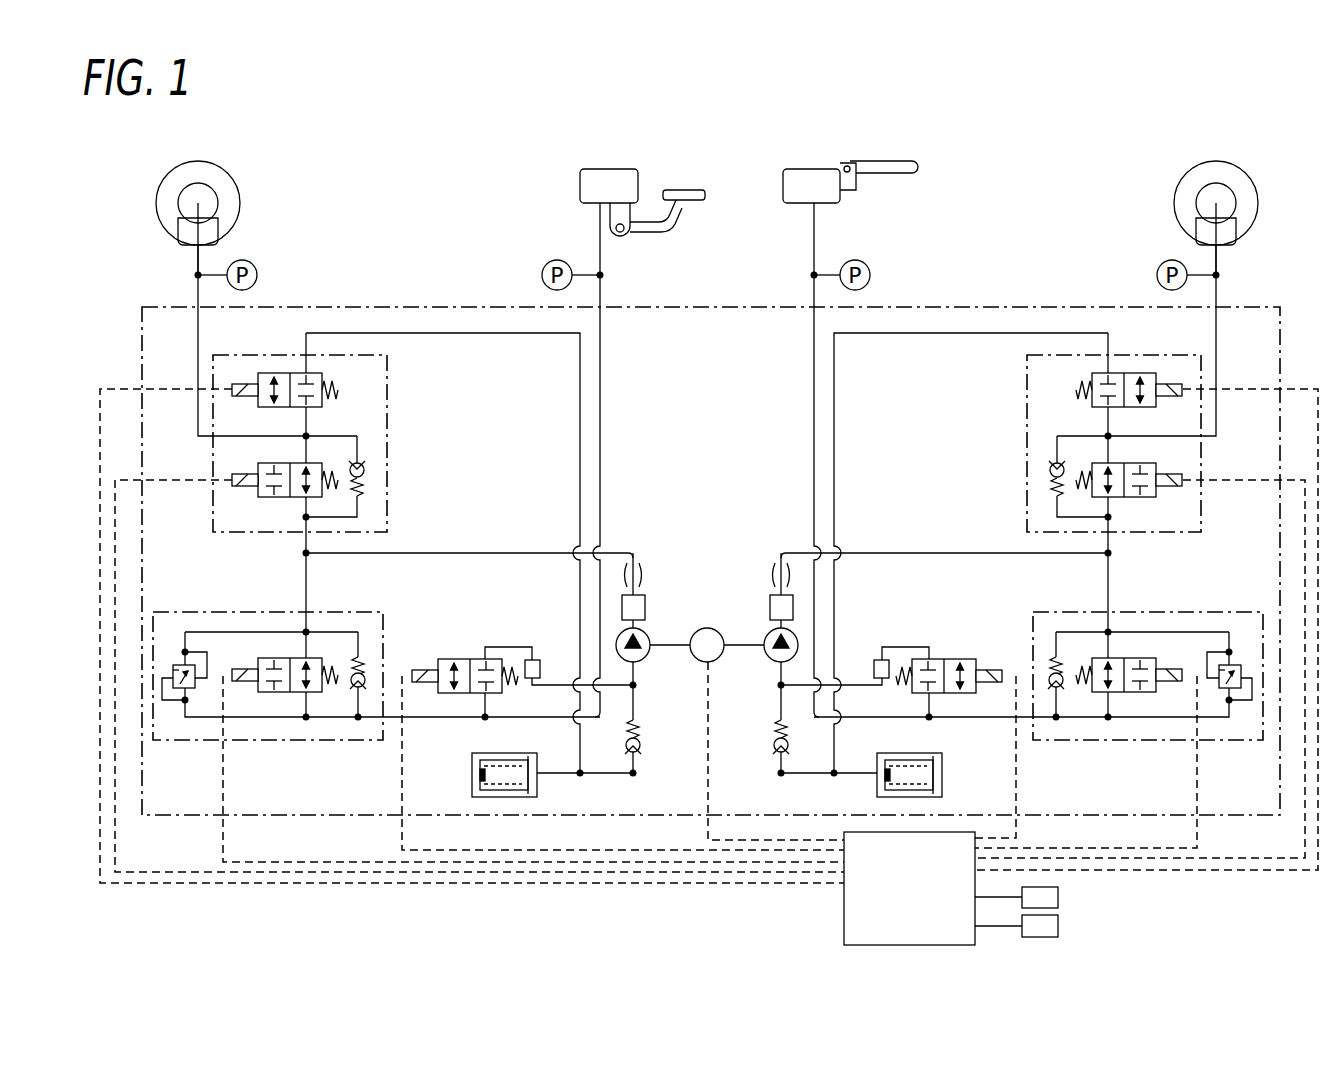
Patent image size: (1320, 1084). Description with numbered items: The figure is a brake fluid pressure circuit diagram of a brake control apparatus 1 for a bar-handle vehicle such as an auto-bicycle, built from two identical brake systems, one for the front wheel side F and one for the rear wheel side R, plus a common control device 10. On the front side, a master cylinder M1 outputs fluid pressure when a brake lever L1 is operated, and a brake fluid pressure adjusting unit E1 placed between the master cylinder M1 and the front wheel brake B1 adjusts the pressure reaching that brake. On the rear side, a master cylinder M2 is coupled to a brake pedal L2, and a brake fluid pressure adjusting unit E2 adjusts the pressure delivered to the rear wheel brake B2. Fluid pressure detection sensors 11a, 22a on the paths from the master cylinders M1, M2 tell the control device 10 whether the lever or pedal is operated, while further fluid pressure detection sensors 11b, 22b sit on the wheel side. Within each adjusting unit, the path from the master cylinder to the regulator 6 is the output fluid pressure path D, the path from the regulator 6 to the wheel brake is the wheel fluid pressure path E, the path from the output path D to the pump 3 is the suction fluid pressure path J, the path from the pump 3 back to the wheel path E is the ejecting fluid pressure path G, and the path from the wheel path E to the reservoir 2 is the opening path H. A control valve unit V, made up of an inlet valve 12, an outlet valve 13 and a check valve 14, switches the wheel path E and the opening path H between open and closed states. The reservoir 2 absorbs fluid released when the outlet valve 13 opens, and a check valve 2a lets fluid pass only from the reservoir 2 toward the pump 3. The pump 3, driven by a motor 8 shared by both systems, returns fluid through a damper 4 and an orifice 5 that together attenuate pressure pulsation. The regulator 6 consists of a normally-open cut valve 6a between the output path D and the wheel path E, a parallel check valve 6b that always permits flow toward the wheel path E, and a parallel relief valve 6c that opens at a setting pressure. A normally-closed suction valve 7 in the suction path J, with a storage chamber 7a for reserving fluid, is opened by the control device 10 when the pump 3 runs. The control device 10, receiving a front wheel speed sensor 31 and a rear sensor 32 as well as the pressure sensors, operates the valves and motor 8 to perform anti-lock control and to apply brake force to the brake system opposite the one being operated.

The brake control apparatus 1 is at (1077, 146).
The reservoir 2 is at (472, 778).
The check valve 2a is at (640, 741).
The pump 3 is at (642, 664).
The damper 4 is at (645, 608).
The orifice 5 is at (648, 572).
The regulator 6 is at (203, 612).
The cut valve 6a is at (284, 692).
The check valve 6b is at (368, 664).
The relief valve 6c is at (186, 720).
The suction valve 7 is at (462, 659).
The storage chamber 7a is at (533, 660).
The motor 8 is at (706, 663).
The control device 10 is at (844, 928).
The inlet valve 12 is at (272, 497).
The outlet valve 13 is at (265, 373).
The check valve 14 is at (366, 483).
The front wheel speed sensor 31 is at (1062, 899).
The sensor 32 is at (1062, 928).
The front wheel brake B1 is at (1161, 204).
The rear wheel brake B2 is at (253, 204).
The master cylinder M1 is at (833, 205).
The master cylinder M2 is at (580, 192).
The brake lever L1 is at (892, 171).
The brake pedal L2 is at (682, 230).
The fluid pressure detection sensor 11a is at (870, 275).
The fluid pressure detection sensor 11b is at (1157, 275).
The fluid pressure detection sensor 22a is at (542, 275).
The fluid pressure detection sensor 22b is at (257, 275).
The brake fluid pressure adjusting unit E1 is at (994, 296).
The brake fluid pressure adjusting unit E2 is at (391, 296).
The wheel fluid pressure path E is at (198, 341).
The opening path H is at (495, 335).
The output fluid pressure path D is at (600, 401).
The ejecting fluid pressure path G is at (487, 553).
The suction fluid pressure path J is at (555, 685).
The control valve unit V is at (213, 455).
The rear wheel side R is at (457, 186).
The front wheel side F is at (976, 184).